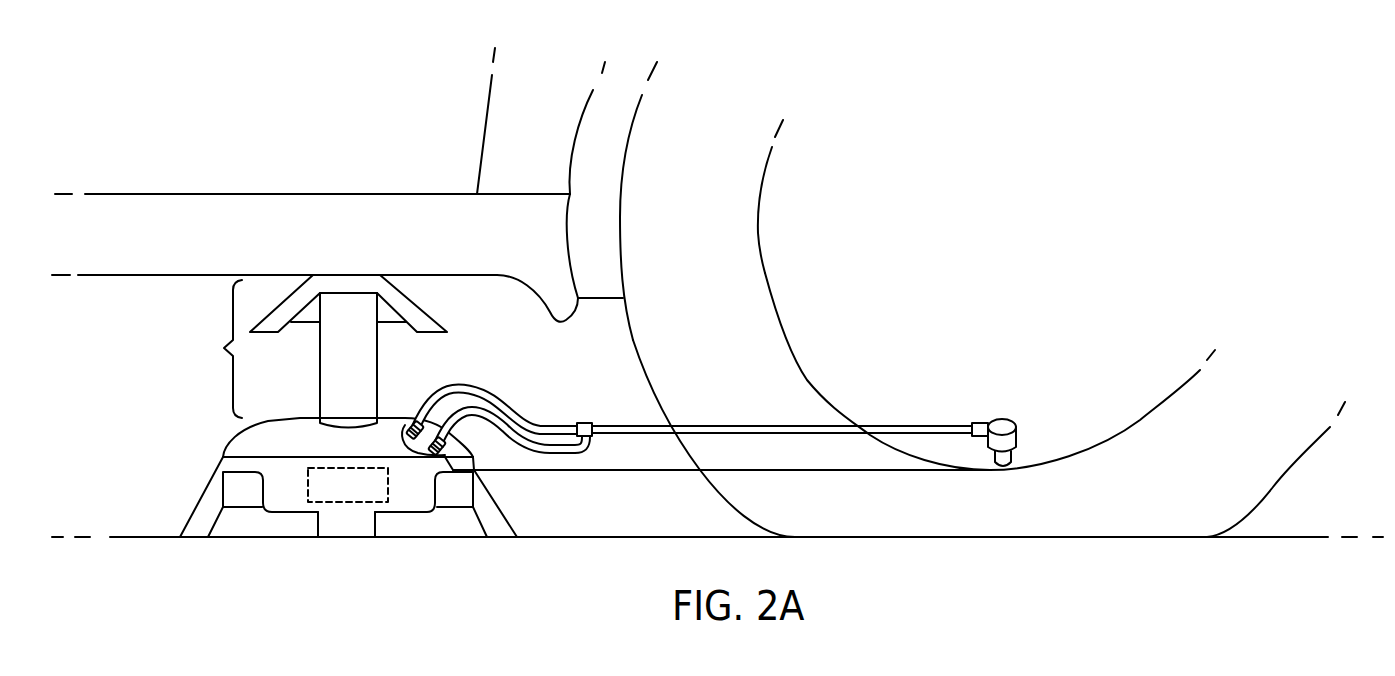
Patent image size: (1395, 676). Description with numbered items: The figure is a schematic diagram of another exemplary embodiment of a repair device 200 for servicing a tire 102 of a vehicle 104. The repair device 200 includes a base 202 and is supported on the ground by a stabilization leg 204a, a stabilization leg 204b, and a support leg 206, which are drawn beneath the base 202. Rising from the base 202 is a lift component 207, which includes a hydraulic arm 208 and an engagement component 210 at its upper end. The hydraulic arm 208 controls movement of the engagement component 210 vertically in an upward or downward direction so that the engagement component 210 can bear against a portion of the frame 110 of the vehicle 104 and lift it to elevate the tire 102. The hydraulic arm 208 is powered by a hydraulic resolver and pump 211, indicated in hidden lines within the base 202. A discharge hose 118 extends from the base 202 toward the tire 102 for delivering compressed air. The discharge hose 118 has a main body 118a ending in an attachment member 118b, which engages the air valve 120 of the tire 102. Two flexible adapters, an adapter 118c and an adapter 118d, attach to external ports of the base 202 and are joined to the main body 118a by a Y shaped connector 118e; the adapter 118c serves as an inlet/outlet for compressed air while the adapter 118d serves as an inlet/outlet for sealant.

The tire 102 is at (1257, 448).
The vehicle 104 is at (285, 127).
The frame 110 is at (137, 253).
The discharge hose 118 is at (702, 470).
The main body 118a is at (783, 425).
The attachment member 118b is at (1010, 440).
The adapter 118c is at (513, 405).
The adapter 118d is at (550, 455).
The "Y" shaped connector 118e is at (587, 423).
The air valve 120 is at (1007, 460).
The repair device 200 is at (191, 399).
The base 202 is at (255, 443).
The stabilization leg 204a is at (195, 538).
The stabilization leg 204b is at (500, 538).
The support leg 206 is at (347, 538).
The lift component 207 is at (318, 329).
The hydraulic arm 208 is at (377, 357).
The engagement component 210 is at (415, 303).
The hydraulic resolver and pump 211 is at (388, 487).